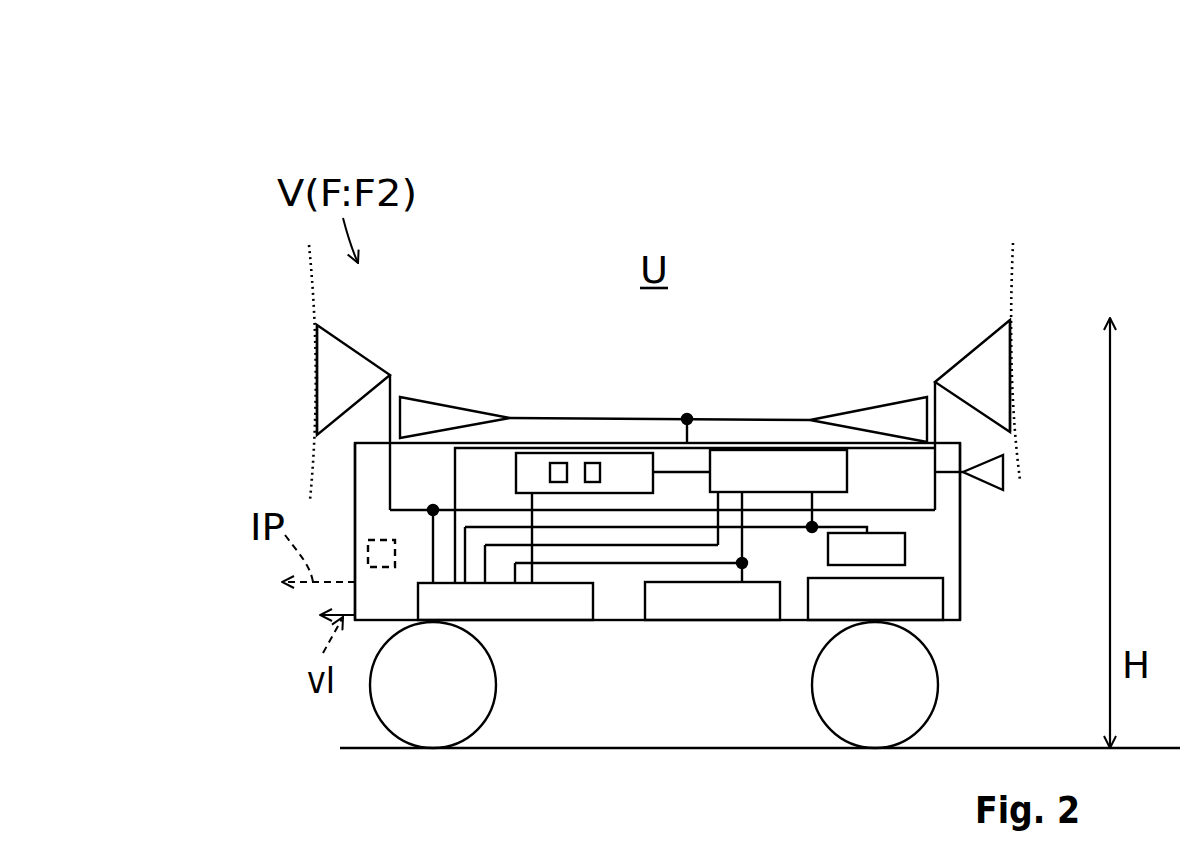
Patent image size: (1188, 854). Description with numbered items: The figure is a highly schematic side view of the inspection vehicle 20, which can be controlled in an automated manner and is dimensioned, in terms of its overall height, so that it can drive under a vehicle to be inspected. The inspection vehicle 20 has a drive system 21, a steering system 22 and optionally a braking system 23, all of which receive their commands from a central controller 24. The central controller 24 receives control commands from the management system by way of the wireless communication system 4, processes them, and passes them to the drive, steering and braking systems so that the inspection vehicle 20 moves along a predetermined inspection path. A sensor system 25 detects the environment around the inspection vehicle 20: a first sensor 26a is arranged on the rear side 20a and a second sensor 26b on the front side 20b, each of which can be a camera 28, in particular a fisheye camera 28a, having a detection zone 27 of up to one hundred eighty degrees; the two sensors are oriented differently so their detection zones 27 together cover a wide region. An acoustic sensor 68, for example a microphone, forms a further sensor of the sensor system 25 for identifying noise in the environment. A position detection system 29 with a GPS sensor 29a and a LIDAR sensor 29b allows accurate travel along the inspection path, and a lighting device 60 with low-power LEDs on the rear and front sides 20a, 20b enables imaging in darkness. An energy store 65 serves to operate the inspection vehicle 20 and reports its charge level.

The inspection vehicle 20 is at (590, 705).
The rear side 20a is at (962, 605).
The front side 20b is at (352, 500).
The drive system 21 is at (725, 602).
The steering system 22 is at (930, 597).
The braking system 23 is at (888, 548).
The central controller 24 is at (535, 608).
The sensor system 25 is at (732, 207).
The first sensor 26a is at (985, 343).
The second sensor 26b is at (316, 353).
The detection zone 27 is at (257, 277).
The camera 28 is at (967, 377).
The fisheye camera 28a is at (330, 388).
The position detection system 29 is at (612, 465).
The GPS sensor 29a is at (558, 463).
The LIDAR sensor 29b is at (592, 482).
The wireless communication system 4 is at (460, 296).
The lighting device 60 is at (447, 418).
The energy store 65 is at (778, 473).
The acoustic sensor 68 is at (995, 478).